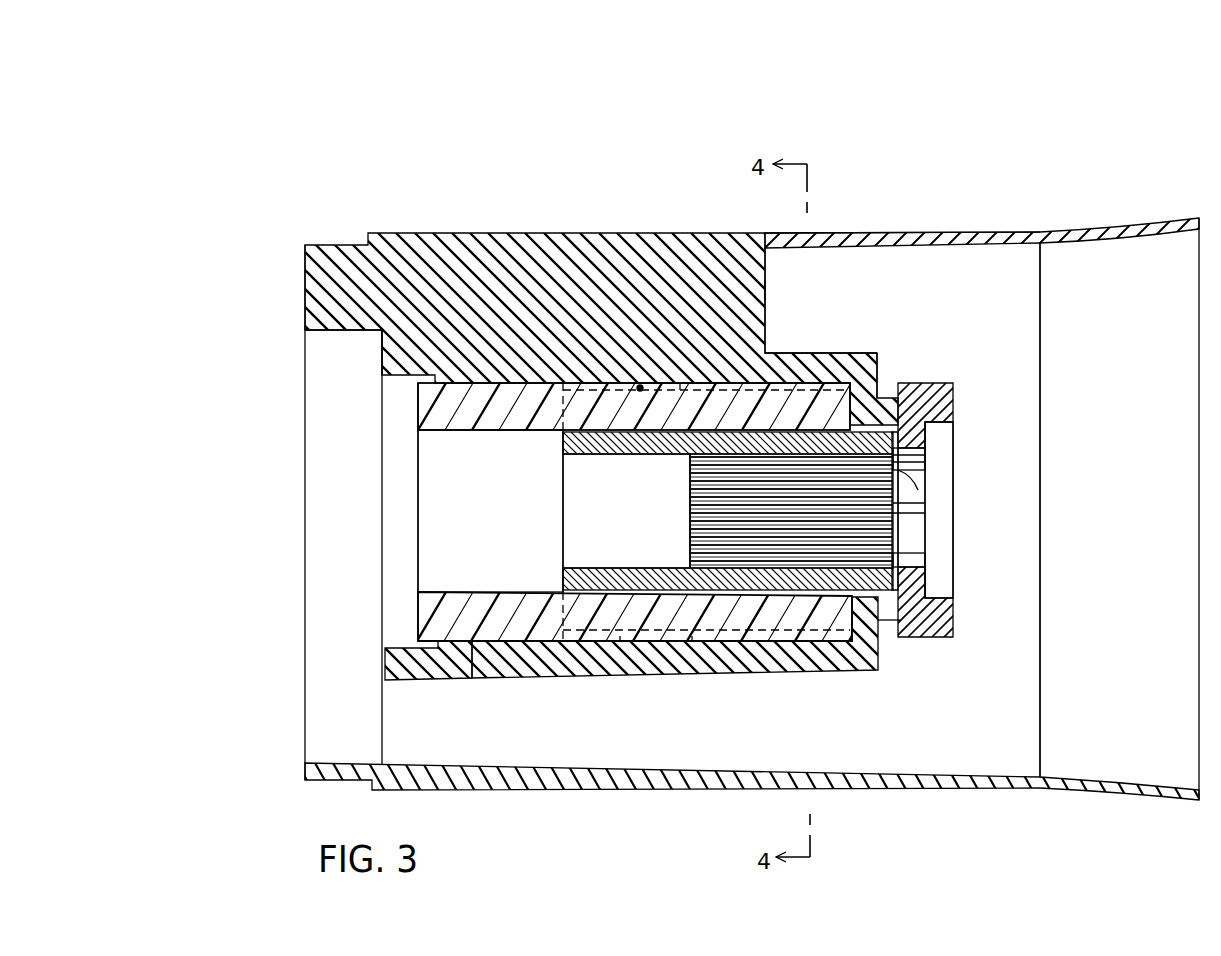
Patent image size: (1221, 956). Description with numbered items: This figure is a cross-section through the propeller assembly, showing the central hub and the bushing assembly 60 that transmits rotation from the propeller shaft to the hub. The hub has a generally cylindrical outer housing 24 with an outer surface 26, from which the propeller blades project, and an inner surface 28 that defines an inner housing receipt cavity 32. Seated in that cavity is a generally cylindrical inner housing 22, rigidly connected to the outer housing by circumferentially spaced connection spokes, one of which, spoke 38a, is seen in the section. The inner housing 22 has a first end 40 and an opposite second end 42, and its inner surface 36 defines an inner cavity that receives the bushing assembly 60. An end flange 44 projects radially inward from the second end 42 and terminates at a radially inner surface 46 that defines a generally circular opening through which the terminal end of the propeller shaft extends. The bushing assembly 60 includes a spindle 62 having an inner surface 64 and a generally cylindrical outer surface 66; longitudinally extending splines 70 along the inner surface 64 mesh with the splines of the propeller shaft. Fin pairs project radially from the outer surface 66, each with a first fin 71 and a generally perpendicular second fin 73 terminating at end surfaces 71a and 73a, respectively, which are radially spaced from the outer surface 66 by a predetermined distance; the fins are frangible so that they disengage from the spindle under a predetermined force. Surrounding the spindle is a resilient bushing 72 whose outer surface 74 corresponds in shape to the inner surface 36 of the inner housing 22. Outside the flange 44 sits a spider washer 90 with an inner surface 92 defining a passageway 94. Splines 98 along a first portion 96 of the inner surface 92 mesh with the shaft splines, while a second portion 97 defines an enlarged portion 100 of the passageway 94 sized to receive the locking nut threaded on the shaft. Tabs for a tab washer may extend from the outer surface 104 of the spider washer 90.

The splines 70 is at (690, 522).
The outer housing 24 is at (303, 242).
The outer surface 26 is at (431, 233).
The first fin 71 is at (640, 386).
The end surface 71a is at (680, 383).
The inner surface 28 is at (838, 262).
The connection spoke 38a is at (755, 291).
The inner housing 22 is at (796, 350).
The inner housing receipt cavity 32 is at (990, 292).
The second end 42 is at (879, 352).
The end flange 44 is at (881, 394).
The outer surface 104 is at (937, 382).
The second portion 97 is at (938, 428).
The first portion 96 is at (910, 466).
The splines 98 is at (918, 475).
The passageway 94 is at (946, 513).
The inner surface 92 is at (915, 553).
The enlarged portion 100 is at (942, 580).
The spider washer 90 is at (955, 642).
The radially inner surface 46 is at (885, 590).
The bushing 72 is at (477, 642).
The outer surface 74 is at (535, 680).
The second fin 73 is at (620, 641).
The end surface 73a is at (692, 641).
The spindle 62 is at (563, 444).
The inner surface 64 is at (668, 450).
The outer surface 66 is at (577, 440).
The first end 40 is at (381, 373).
The inner surface 36 is at (343, 432).
The bushing assembly 60 is at (417, 612).